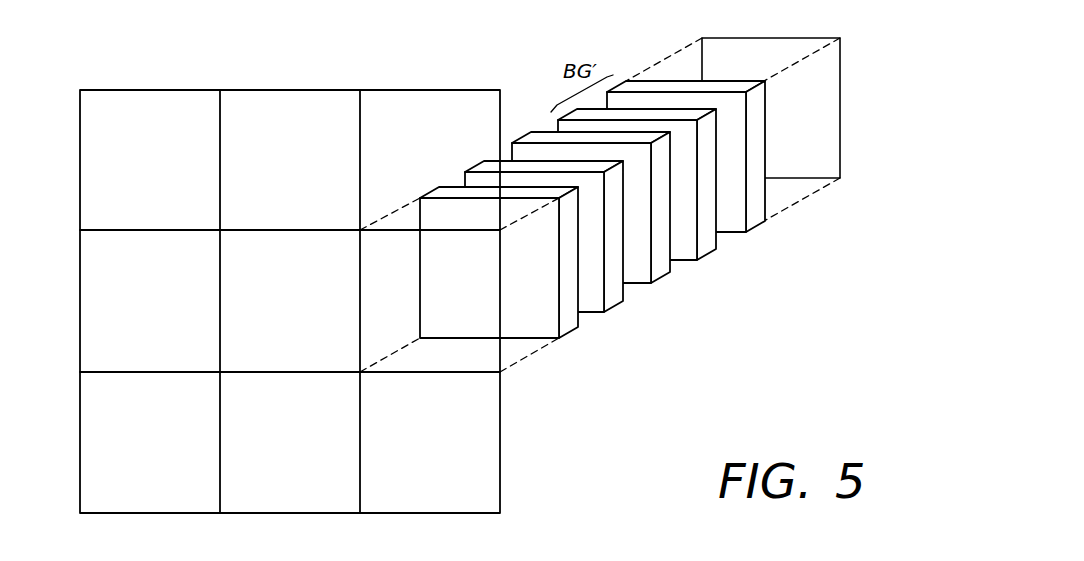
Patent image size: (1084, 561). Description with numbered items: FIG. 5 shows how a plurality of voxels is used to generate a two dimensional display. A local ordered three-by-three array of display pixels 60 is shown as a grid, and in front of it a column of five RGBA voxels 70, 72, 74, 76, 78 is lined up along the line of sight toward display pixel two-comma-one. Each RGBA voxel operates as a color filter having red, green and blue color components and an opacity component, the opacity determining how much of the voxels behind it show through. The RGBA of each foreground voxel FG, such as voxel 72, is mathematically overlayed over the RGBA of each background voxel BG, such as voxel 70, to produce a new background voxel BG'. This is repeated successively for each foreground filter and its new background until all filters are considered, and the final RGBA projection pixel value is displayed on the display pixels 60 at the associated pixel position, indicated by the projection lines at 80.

The display pixels 60 is at (78, 110).
The background voxel 70 is at (752, 212).
The foreground voxel 72 is at (705, 238).
The RGBA voxel 74 is at (658, 267).
The RGBA voxel 76 is at (610, 293).
The RGBA voxel 78 is at (563, 318).
The projection region onto grid 80 is at (465, 357).